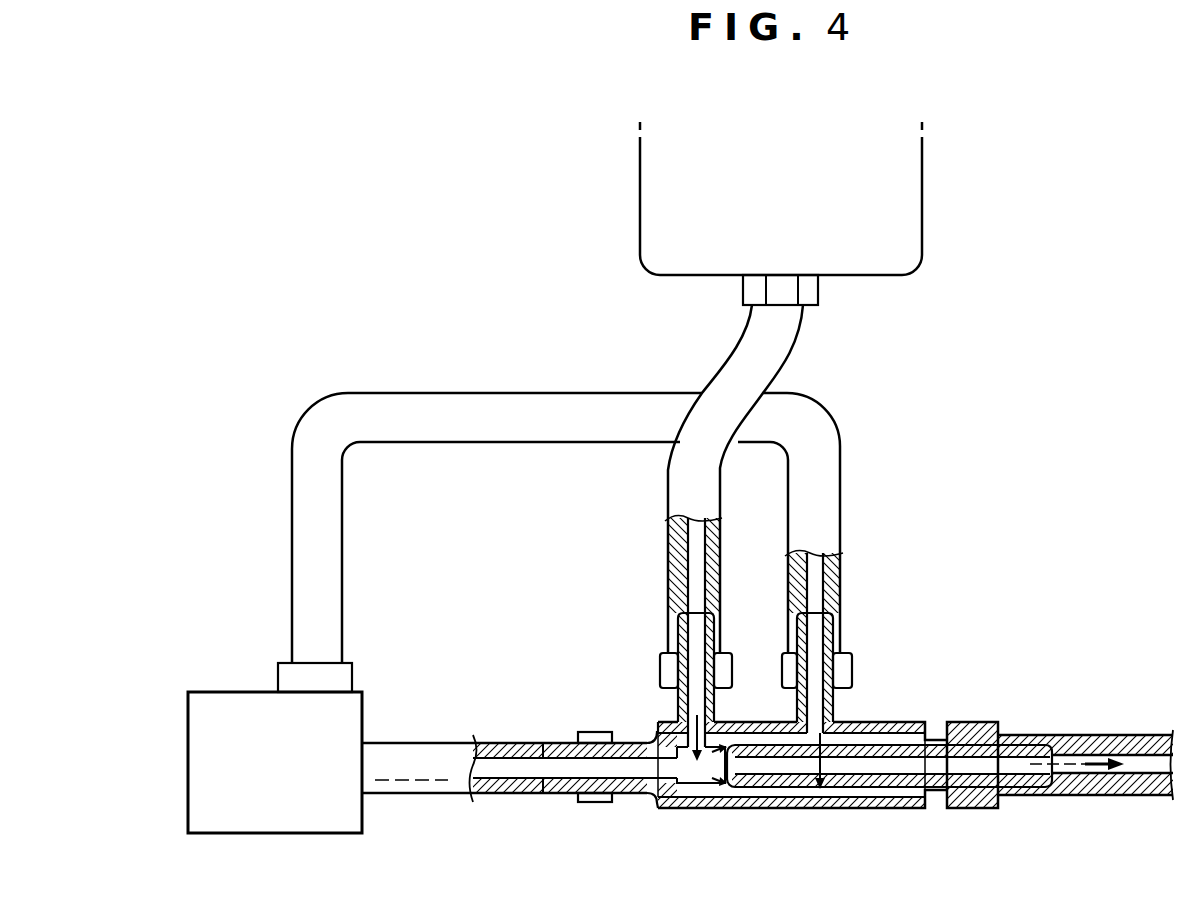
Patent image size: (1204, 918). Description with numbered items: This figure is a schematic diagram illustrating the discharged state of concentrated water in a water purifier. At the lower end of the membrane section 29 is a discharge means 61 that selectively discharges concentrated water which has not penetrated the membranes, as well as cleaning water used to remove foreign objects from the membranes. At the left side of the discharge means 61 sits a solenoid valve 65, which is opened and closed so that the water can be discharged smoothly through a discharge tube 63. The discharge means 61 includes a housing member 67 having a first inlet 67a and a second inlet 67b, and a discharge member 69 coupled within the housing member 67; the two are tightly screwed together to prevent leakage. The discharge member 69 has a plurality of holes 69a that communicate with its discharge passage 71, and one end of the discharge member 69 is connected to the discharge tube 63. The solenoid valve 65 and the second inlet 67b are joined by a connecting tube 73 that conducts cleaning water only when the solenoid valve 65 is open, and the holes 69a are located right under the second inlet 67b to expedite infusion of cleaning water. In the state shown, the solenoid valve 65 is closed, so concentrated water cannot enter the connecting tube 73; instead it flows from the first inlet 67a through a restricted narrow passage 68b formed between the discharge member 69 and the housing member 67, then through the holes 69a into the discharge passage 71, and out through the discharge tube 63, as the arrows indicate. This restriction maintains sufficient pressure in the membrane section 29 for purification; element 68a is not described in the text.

The membrane section 29 is at (905, 242).
The connecting tube 73 is at (825, 438).
The first inlet 67a is at (693, 632).
The second inlet 67b is at (817, 650).
The discharge means 61 is at (896, 660).
The discharge tube 63 is at (1083, 745).
The solenoid valve 65 is at (257, 815).
The inlet tube 68a is at (565, 772).
The housing member 67 is at (700, 790).
The restricted narrow passage 68b is at (735, 790).
The discharge member 69 is at (770, 790).
The holes 69a is at (822, 790).
The discharge passage 71 is at (943, 810).